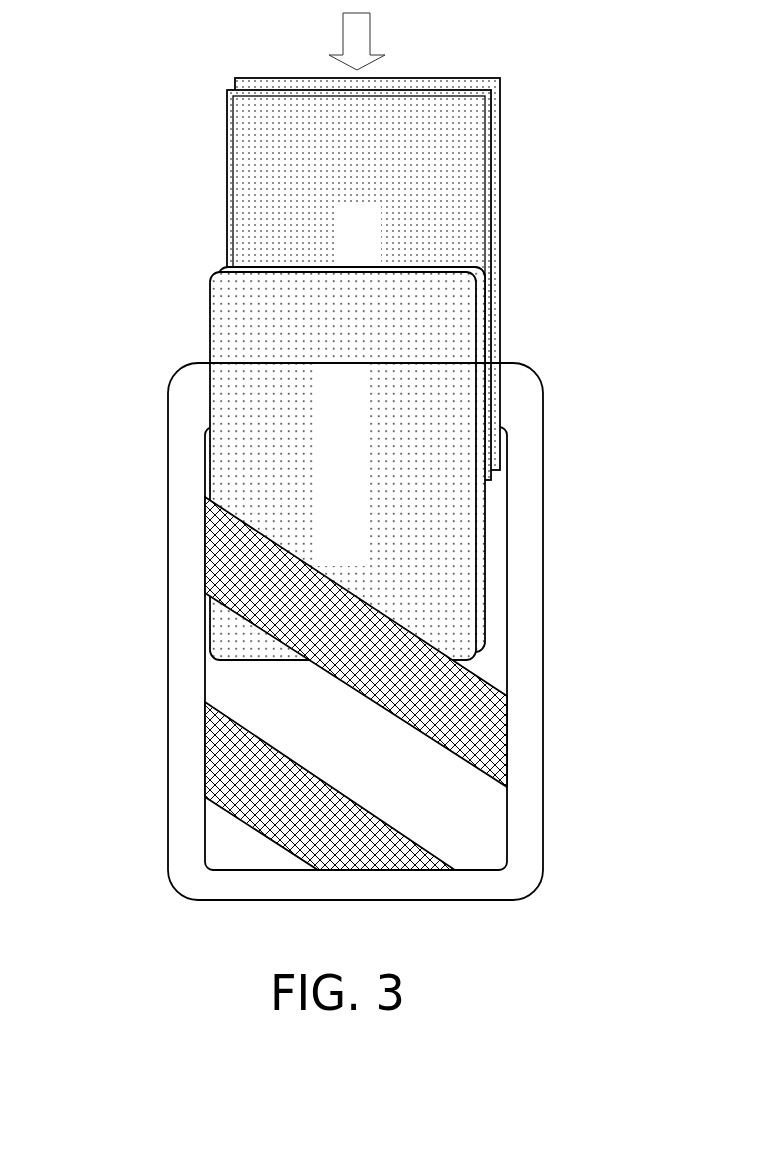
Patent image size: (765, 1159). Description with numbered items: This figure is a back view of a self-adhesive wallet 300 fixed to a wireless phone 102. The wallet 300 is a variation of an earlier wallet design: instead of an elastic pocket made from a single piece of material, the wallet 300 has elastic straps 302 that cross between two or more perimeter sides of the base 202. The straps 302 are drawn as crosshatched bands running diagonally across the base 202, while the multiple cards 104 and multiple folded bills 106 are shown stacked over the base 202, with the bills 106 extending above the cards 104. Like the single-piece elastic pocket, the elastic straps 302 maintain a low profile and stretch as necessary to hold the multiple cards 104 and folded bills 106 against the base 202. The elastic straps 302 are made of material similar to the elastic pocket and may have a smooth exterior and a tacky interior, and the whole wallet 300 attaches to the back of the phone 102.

The wireless phone 102 is at (543, 543).
The cards 104 is at (470, 410).
The folded bills 106 is at (488, 205).
The base 202 is at (487, 838).
The self-adhesive wallet 300 is at (525, 633).
The elastic straps 302 is at (222, 562).